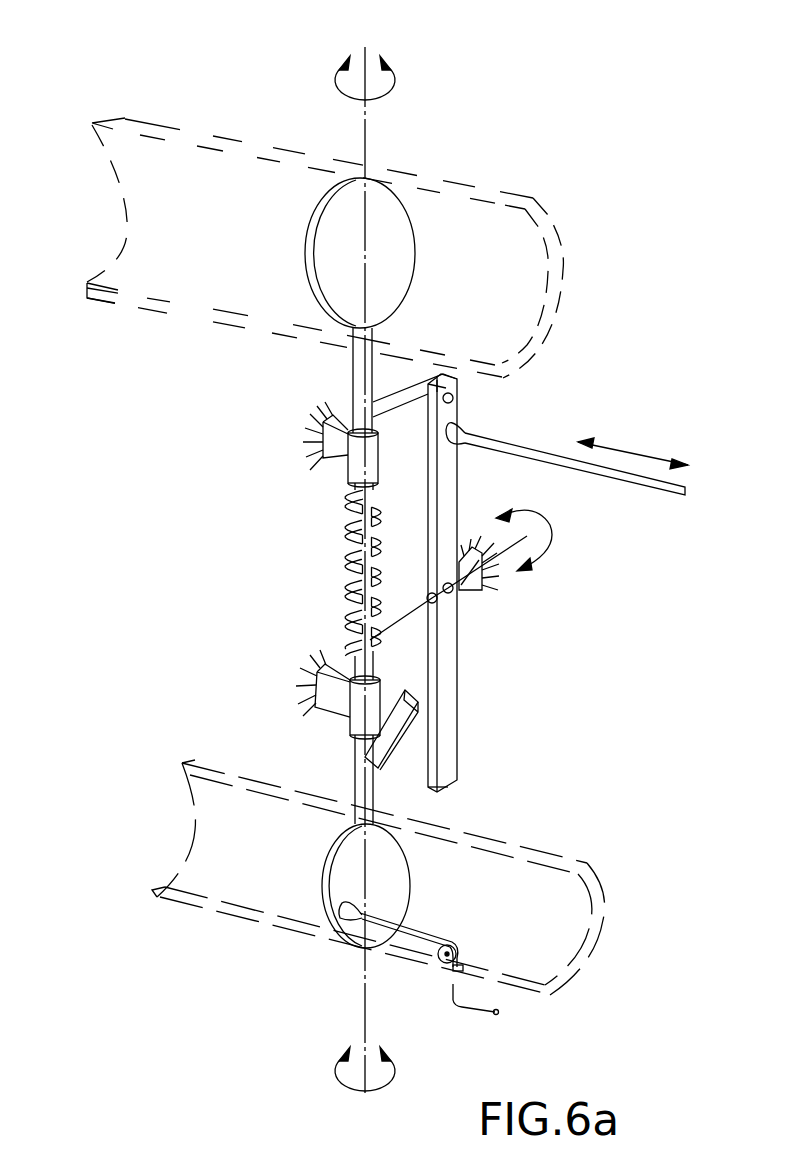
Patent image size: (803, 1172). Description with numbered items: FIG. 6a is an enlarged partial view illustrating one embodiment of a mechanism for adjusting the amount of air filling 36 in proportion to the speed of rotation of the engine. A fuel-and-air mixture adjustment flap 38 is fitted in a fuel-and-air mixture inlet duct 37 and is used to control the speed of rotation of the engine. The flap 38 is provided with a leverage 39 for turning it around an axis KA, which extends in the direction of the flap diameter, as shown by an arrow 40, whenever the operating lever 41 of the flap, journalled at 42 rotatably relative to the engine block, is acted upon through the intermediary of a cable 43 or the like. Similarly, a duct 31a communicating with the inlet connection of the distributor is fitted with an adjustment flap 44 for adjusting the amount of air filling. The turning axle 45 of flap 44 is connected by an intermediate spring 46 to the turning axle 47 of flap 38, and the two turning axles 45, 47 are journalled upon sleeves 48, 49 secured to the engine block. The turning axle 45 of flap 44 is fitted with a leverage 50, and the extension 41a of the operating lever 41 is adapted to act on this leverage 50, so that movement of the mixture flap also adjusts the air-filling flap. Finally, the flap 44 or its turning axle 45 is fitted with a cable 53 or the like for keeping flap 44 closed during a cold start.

The duct 31a is at (235, 898).
The air filling 36 is at (566, 194).
The fuel-and-air mixture inlet duct 37 is at (205, 152).
The fuel-and-air mixture adjustment flap 38 is at (397, 230).
The leverage 39 is at (421, 384).
The arrow 40 is at (371, 94).
The operating lever 41 is at (454, 408).
The extension of operating lever 41a is at (455, 670).
The journal 42 is at (497, 585).
The cable 43 is at (575, 465).
The adjustment flap 44 is at (395, 866).
The turning axle 45 is at (362, 766).
The intermediate spring 46 is at (350, 566).
The turning axle 47 is at (356, 378).
The sleeve 48 is at (348, 694).
The sleeve 49 is at (358, 452).
The leverage 50 is at (396, 727).
The cable 53 is at (413, 938).
The axis KA is at (366, 145).